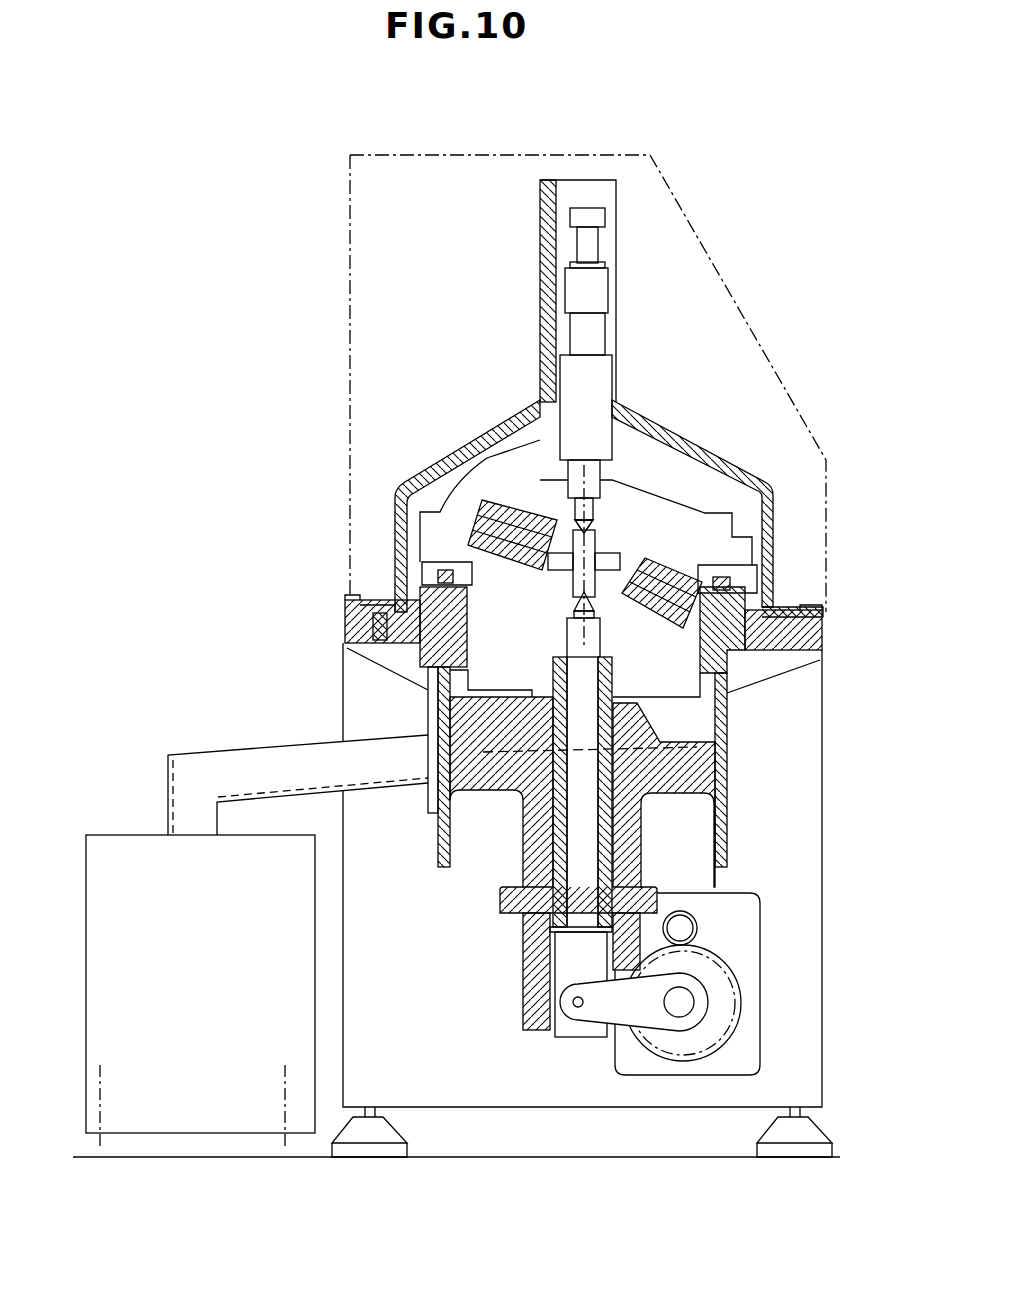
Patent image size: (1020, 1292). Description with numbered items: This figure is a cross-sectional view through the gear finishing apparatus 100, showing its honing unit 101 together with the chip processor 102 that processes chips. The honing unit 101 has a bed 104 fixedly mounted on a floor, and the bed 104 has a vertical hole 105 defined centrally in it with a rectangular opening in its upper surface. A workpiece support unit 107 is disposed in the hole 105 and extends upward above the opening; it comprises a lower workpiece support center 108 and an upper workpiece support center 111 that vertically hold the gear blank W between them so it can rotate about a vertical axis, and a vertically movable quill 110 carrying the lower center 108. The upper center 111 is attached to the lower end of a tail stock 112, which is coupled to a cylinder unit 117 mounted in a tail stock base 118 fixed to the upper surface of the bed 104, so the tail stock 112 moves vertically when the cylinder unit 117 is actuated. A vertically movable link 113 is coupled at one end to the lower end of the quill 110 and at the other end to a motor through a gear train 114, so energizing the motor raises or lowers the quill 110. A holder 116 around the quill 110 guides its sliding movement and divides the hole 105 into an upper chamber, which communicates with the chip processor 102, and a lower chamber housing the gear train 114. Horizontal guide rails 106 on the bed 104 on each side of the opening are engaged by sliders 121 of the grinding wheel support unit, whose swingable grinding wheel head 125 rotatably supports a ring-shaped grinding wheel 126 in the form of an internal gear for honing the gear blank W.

The gear finishing apparatus 100 is at (235, 110).
The honing unit 101 is at (688, 178).
The chip processor 102 is at (118, 850).
The bed 104 is at (800, 1005).
The vertical hole 105 is at (400, 490).
The guide rails 106 is at (420, 567).
The workpiece support unit 107 is at (625, 503).
The lower workpiece support center 108 is at (590, 610).
The vertically movable quill 110 is at (557, 690).
The upper workpiece support center 111 is at (597, 512).
The tail stock 112 is at (590, 410).
The vertically movable link 113 is at (617, 1005).
The gear train 114 is at (718, 947).
The holder 116 is at (673, 747).
The cylinder unit 117 is at (600, 297).
The tail stock base 118 is at (605, 190).
The sliders 121 is at (730, 567).
The grinding wheel head 125 is at (495, 498).
The grinding wheel 126 is at (522, 570).
The gear blank W is at (598, 550).